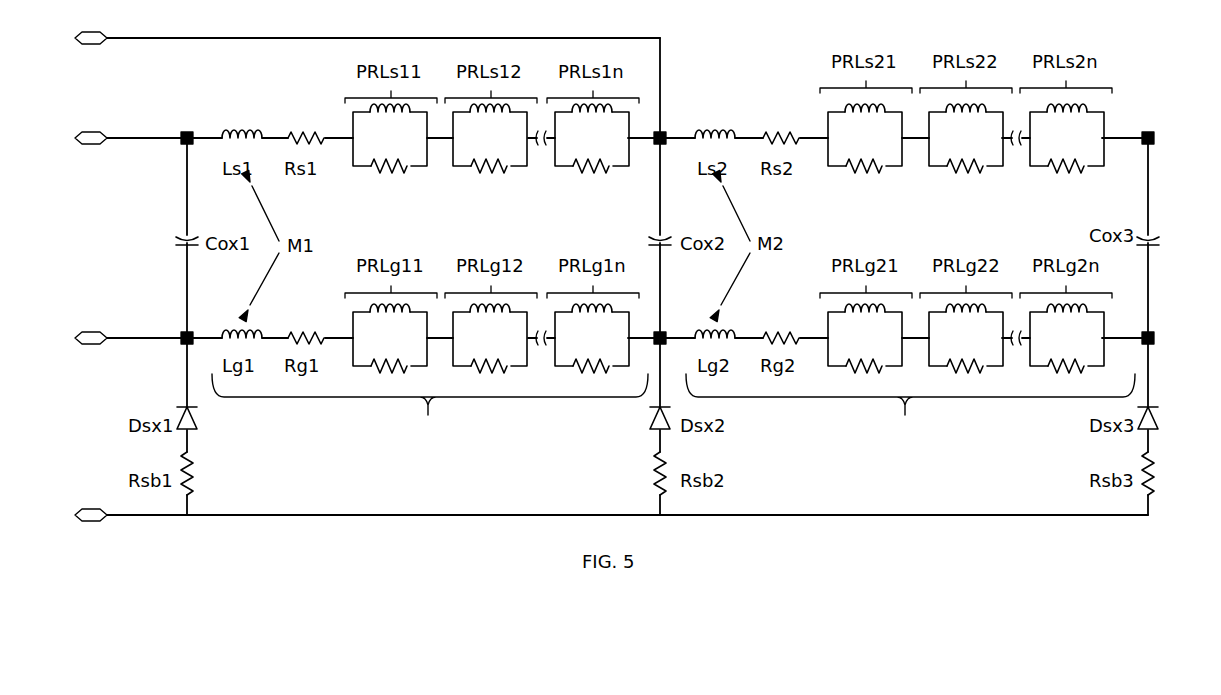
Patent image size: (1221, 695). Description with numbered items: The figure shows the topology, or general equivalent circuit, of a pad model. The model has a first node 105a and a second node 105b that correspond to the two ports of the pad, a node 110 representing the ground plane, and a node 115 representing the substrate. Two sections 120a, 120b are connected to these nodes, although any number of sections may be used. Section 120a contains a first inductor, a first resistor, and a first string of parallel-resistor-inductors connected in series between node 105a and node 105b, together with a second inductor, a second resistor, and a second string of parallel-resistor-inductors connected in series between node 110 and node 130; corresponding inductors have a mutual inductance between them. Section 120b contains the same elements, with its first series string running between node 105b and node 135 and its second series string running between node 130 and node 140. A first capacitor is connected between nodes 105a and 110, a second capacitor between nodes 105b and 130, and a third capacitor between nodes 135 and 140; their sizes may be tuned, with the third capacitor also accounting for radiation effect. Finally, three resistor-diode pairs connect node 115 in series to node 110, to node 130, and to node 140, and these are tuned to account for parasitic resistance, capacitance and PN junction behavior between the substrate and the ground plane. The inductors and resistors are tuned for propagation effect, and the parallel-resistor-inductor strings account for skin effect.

The first node 105a is at (97, 124).
The second node 105b is at (367, 25).
The node representing the ground plane 110 is at (92, 324).
The node representing the substrate 115 is at (611, 527).
The section 120a is at (430, 270).
The section 120b is at (910, 265).
The node 130 is at (672, 326).
The node 135 is at (1154, 124).
The node 140 is at (1166, 336).